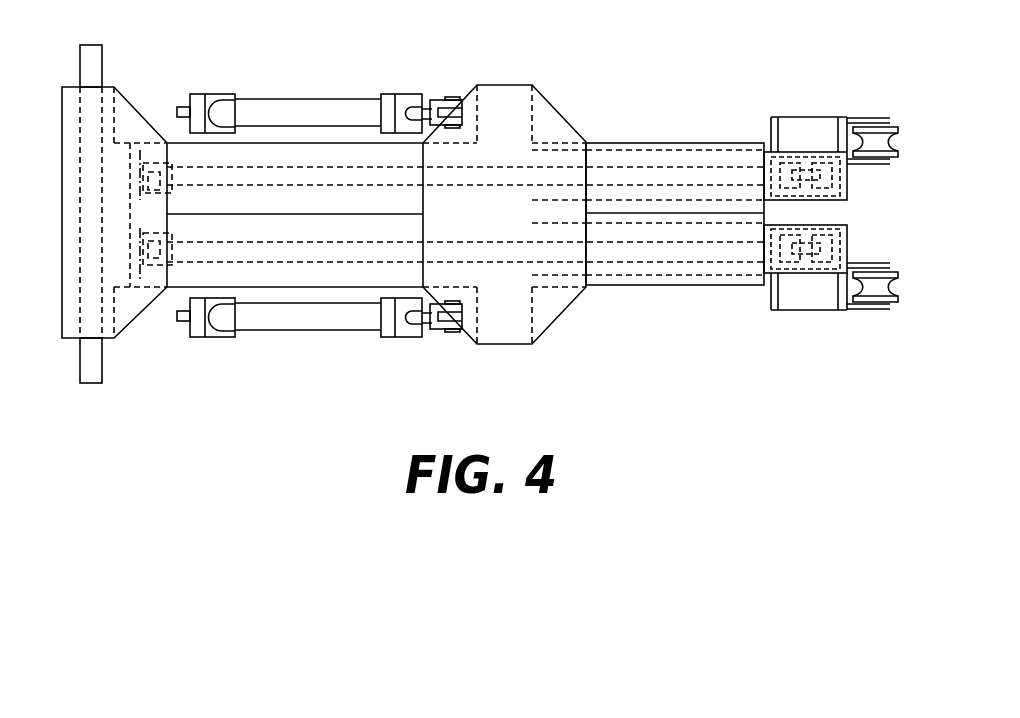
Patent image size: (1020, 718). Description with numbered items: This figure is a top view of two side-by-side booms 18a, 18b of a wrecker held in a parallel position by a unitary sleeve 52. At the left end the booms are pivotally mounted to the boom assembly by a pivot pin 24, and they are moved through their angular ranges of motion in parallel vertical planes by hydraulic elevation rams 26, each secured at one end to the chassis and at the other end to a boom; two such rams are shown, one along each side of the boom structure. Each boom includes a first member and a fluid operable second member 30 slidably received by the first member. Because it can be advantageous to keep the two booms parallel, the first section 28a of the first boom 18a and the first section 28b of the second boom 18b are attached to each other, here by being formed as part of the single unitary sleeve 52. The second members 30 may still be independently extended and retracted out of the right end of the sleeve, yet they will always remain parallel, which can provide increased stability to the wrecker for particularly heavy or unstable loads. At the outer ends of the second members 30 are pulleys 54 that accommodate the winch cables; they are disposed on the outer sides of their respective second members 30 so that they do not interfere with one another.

The pivot pin 24 is at (84, 383).
The hydraulic elevation ram 26 is at (307, 105).
The first member of first boom 28a is at (243, 136).
The first member of second boom 28b is at (728, 297).
The first boom 18a is at (683, 104).
The second boom 18b is at (670, 334).
The unitary sleeve 52 is at (735, 157).
The second member 30 is at (847, 185).
The pulley 54 is at (897, 128).